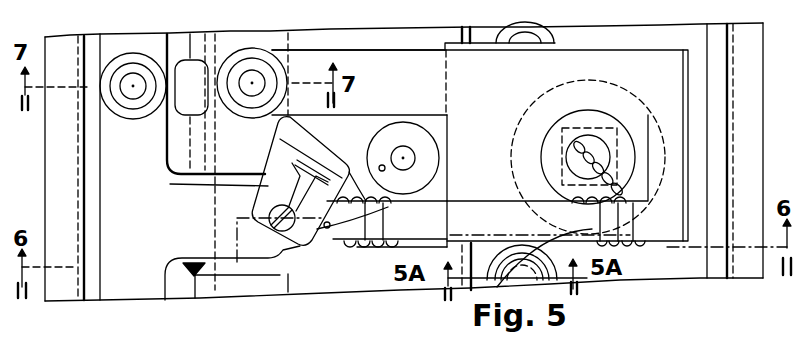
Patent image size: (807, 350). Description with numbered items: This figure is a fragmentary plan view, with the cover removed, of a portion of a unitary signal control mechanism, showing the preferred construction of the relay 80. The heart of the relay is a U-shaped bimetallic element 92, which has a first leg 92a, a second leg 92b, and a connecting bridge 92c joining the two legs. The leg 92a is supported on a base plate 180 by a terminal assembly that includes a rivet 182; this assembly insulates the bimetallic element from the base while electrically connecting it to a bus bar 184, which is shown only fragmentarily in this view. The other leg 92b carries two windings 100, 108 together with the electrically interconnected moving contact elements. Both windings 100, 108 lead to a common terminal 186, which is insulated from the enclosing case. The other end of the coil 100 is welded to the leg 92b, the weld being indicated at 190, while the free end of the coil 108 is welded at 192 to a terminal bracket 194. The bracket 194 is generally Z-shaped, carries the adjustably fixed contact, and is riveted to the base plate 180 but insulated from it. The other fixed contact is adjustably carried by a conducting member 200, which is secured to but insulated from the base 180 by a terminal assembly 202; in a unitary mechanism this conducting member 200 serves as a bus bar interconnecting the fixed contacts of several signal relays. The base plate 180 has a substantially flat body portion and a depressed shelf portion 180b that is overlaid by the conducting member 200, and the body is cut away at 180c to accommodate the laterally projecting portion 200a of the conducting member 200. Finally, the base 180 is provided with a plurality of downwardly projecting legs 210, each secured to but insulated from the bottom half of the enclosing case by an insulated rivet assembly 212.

The terminal assembly 202 is at (130, 62).
The depressed shelf portion 180b is at (187, 36).
The base plate 180 is at (262, 36).
The leg of bimetallic element 92a is at (392, 52).
The downwardly projecting legs 210 is at (487, 36).
The bimetallic element 92 is at (630, 56).
The insulated rivet assembly 212 is at (542, 40).
The rivet 182 is at (251, 94).
The cut away portion 180c is at (220, 170).
The terminal bracket 194 is at (368, 128).
The weld 192 is at (381, 165).
The common terminal 186 is at (573, 143).
The connecting bridge 92c is at (678, 150).
The laterally projecting portion 200a is at (215, 219).
The winding 100 is at (387, 222).
The winding 108 is at (392, 241).
The leg of bimetallic element 92b is at (438, 199).
The weld 190 is at (327, 229).
The conducting member 200 is at (182, 292).
The bus bar 184 is at (220, 290).
The relay 80 is at (440, 306).